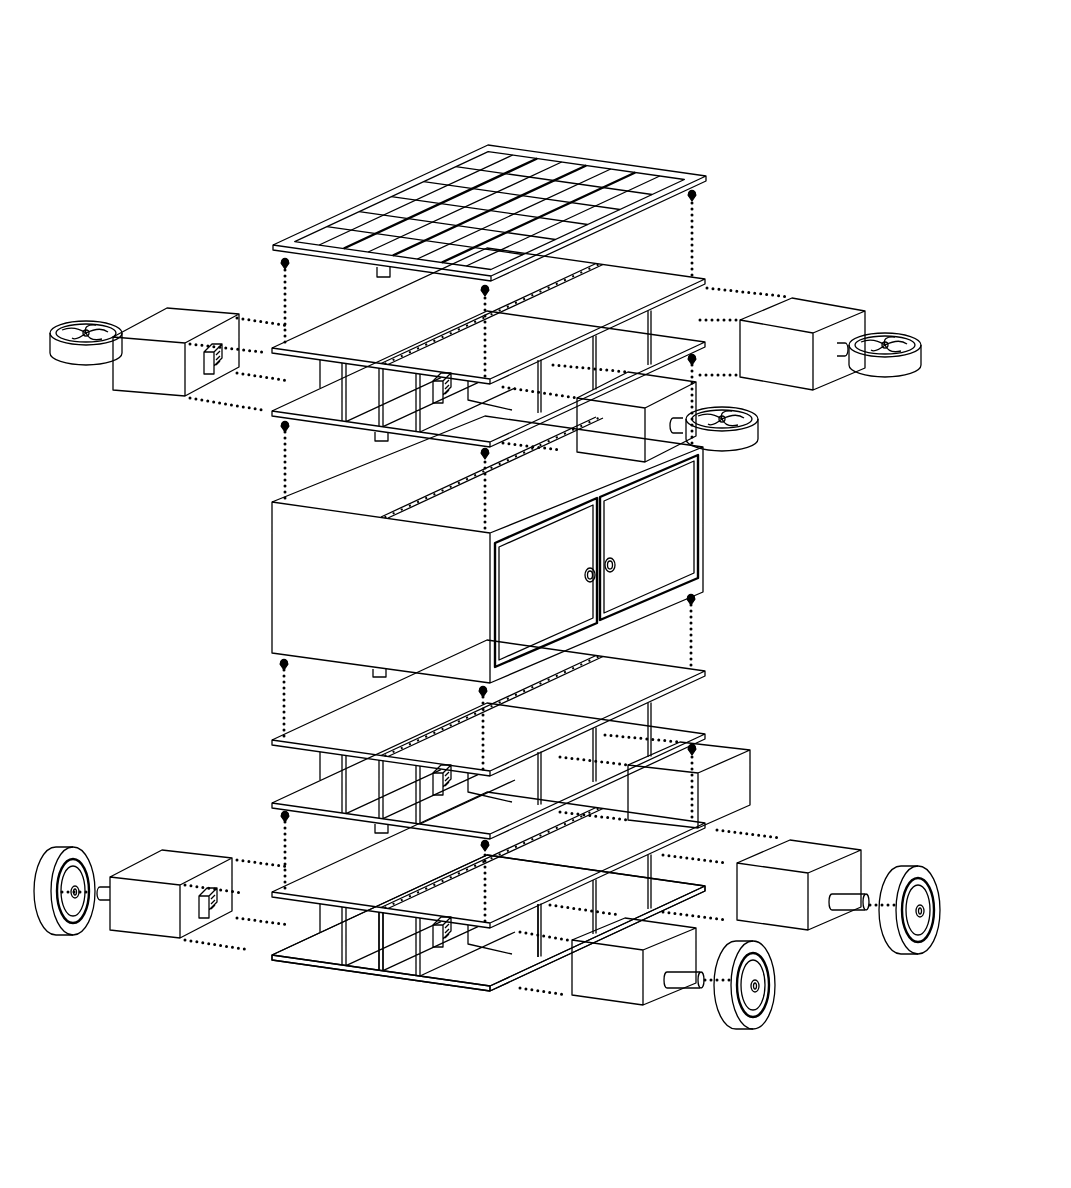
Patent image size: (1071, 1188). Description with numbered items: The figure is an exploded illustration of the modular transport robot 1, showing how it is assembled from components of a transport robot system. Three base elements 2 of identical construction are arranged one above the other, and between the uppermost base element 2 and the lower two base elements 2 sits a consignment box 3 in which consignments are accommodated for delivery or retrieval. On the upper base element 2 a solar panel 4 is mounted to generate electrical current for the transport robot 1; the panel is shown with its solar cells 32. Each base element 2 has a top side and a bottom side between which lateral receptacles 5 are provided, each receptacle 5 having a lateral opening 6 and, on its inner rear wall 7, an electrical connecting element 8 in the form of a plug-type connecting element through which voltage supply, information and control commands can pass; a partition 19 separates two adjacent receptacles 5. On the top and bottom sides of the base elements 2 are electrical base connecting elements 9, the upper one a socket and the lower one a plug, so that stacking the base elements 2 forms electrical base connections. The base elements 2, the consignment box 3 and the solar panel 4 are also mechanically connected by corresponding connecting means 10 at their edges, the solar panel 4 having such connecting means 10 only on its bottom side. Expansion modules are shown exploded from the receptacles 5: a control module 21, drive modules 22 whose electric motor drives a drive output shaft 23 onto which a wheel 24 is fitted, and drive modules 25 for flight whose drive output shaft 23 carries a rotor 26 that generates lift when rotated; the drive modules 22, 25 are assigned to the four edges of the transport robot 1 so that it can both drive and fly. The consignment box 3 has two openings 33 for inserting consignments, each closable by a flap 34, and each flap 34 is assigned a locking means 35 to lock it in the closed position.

The transport robot 1 is at (263, 113).
The base element 2 is at (590, 313).
The consignment box 3 is at (491, 549).
The solar panel 4 is at (489, 183).
The receptacle 5 is at (527, 849).
The lateral opening 6 is at (708, 718).
The inner rear wall 7 is at (419, 940).
The connecting element 8 is at (205, 362).
The base connecting element 9 is at (413, 345).
The connecting means 10 is at (694, 276).
The partition 19 is at (521, 944).
The control module 21 is at (740, 782).
The drive module 22 is at (177, 865).
The drive output shaft 23 is at (840, 360).
The wheel 24 is at (65, 850).
The drive module 25 is at (182, 322).
The rotor 26 is at (80, 352).
The solar cell 32 is at (565, 167).
The opening 33 is at (494, 600).
The flap 34 is at (525, 566).
The locking means 35 is at (585, 582).